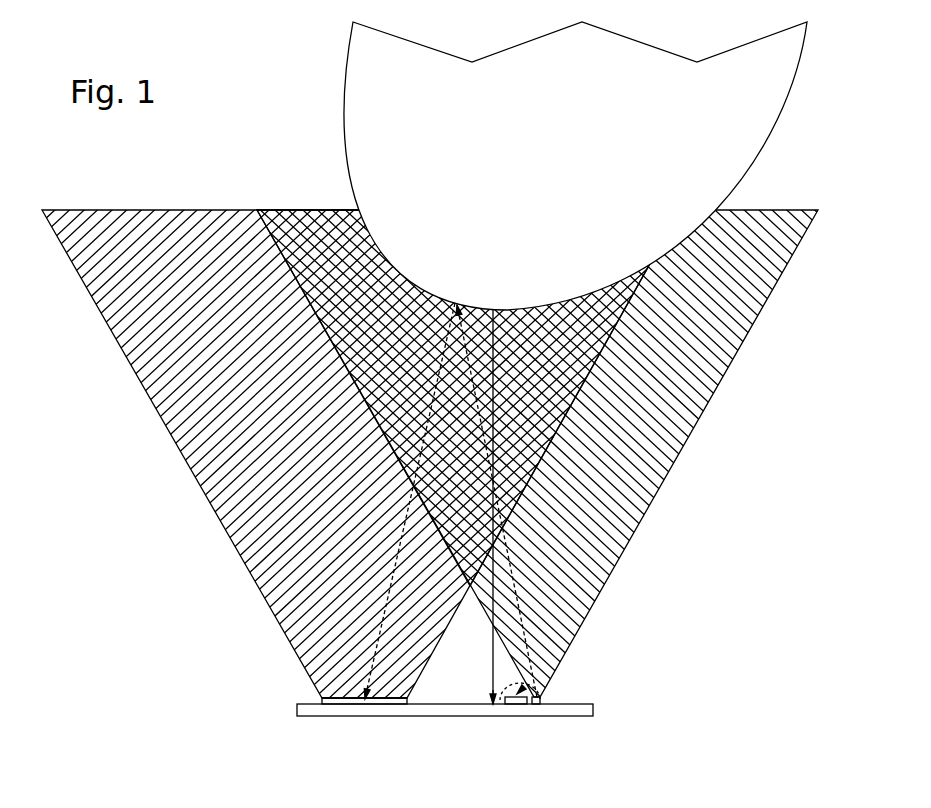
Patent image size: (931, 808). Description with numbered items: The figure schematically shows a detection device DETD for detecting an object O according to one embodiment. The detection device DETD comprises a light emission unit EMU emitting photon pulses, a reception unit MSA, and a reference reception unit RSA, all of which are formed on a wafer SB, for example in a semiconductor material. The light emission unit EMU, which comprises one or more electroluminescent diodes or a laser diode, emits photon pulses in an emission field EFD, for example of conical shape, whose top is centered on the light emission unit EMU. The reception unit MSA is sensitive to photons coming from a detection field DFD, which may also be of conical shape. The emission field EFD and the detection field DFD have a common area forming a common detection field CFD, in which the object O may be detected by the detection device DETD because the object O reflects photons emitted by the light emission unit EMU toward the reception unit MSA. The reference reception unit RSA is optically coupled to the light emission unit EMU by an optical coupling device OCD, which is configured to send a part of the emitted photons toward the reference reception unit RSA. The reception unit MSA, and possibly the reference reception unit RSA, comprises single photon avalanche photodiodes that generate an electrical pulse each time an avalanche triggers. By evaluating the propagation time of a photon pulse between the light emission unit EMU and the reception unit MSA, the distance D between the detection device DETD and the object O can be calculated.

The object O is at (768, 123).
The distance D is at (501, 507).
The common detection field CFD is at (290, 210).
The detection field DFD is at (190, 440).
The emission field EFD is at (715, 370).
The detection device DETD is at (262, 698).
The reception unit MSA is at (318, 701).
The optical coupling device OCD is at (503, 694).
The light emission unit EMU is at (542, 701).
The reference reception unit RSA is at (512, 706).
The wafer SB is at (593, 705).